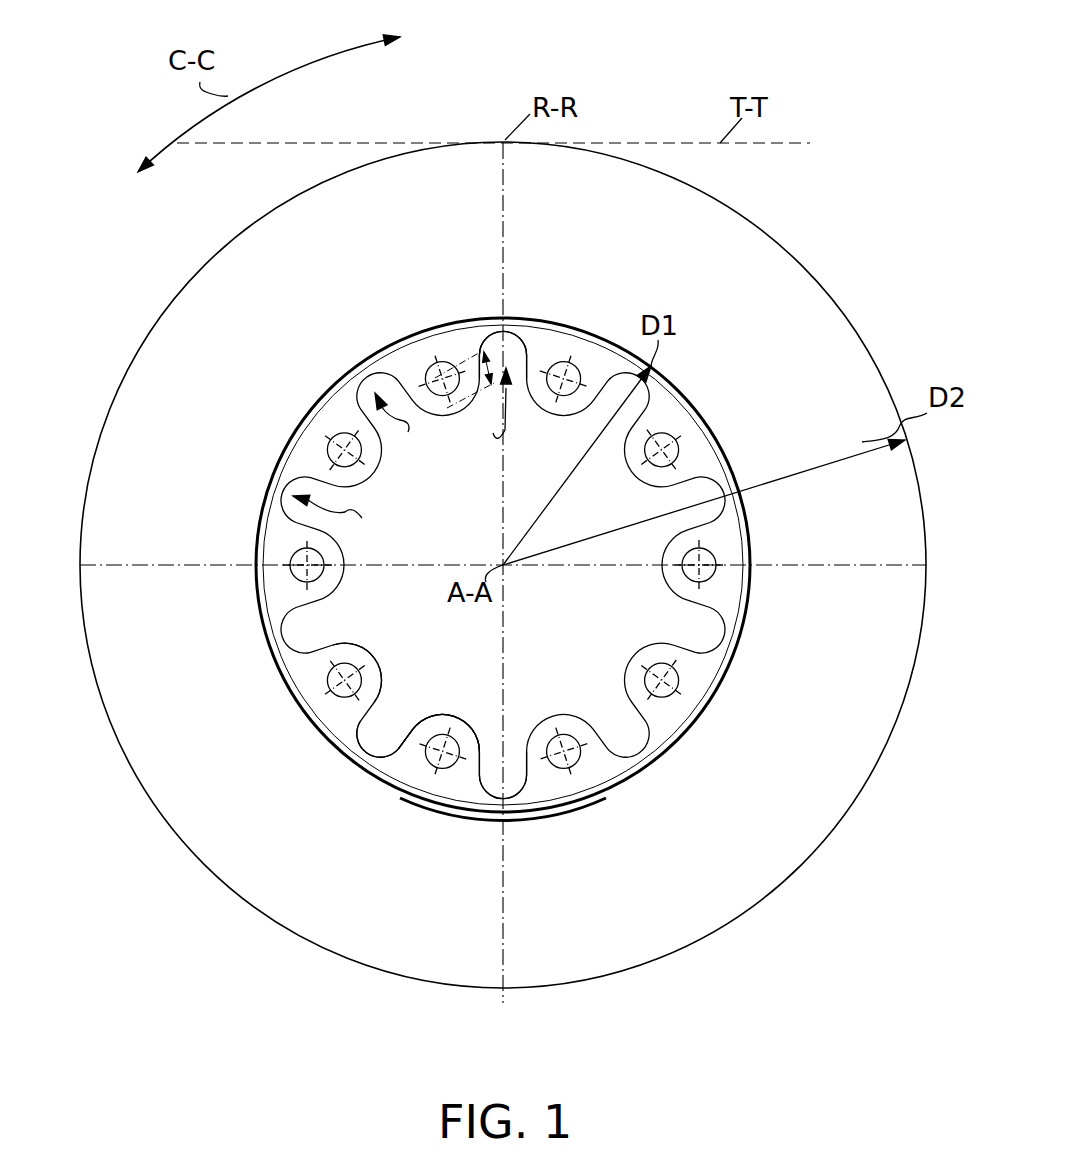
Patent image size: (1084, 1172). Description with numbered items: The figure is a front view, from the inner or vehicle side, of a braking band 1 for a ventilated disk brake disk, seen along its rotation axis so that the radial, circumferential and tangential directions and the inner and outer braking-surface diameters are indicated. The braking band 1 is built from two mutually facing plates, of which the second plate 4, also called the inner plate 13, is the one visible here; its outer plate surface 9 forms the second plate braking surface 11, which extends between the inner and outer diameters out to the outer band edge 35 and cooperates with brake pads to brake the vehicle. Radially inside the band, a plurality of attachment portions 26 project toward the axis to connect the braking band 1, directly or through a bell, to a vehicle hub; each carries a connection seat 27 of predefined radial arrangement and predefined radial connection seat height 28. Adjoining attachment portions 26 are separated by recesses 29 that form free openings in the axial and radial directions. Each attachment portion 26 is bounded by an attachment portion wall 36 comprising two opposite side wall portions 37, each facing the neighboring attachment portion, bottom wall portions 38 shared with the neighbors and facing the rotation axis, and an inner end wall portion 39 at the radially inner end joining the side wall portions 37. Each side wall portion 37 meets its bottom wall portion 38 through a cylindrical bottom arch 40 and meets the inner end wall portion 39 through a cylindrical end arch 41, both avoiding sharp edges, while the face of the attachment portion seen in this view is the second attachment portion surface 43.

The braking band 1 is at (483, 565).
The second plate 4 is at (466, 539).
The second plate outer surface 9 is at (503, 565).
The second plate braking surface 11 is at (228, 318).
The inner plate 13 is at (305, 215).
The attachment portion 26 is at (447, 412).
The connection seat 27 is at (566, 362).
The radial connection seat height 28 is at (503, 322).
The recesses 29 is at (402, 455).
The outer band edge 35 is at (292, 698).
The attachment portion wall 36 is at (372, 750).
The side wall portion 37 is at (410, 730).
The bottom wall portion 38 is at (392, 775).
The inner end wall portion 39 is at (455, 714).
The cylindrical bottom arch 40 is at (398, 790).
The cylindrical end arch 41 is at (427, 720).
The second attachment portion surface 43 is at (463, 770).